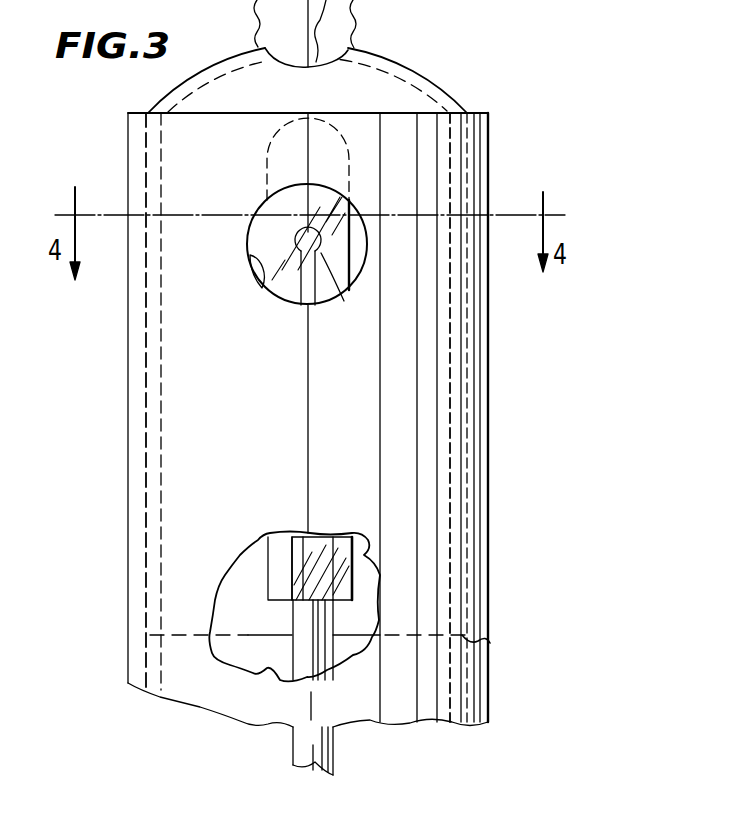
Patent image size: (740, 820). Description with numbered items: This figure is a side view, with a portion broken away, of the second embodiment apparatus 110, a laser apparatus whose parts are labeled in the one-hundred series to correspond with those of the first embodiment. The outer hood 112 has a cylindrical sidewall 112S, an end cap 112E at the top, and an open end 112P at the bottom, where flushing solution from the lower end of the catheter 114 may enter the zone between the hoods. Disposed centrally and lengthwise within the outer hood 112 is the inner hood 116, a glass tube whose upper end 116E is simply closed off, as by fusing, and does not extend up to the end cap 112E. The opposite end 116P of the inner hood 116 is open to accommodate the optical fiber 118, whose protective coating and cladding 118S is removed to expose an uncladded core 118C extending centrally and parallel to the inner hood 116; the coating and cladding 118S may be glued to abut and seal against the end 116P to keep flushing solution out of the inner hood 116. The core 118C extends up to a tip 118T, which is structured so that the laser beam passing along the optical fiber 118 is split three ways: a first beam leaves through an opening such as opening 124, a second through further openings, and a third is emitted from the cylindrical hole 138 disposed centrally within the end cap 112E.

The apparatus 110 is at (610, 371).
The outer hood 112 is at (437, 96).
The end cap 112E is at (400, 63).
The sidewall 112S is at (470, 362).
The open end 112P is at (490, 640).
The catheter 114 is at (490, 607).
The inner hood 116 is at (355, 533).
The upper end 116E is at (323, 84).
The end 116P is at (288, 601).
The optical fiber 118 is at (335, 753).
The tip 118T is at (321, 267).
The uncladded core 118C is at (268, 535).
The protective coating and cladding 118S is at (295, 652).
The opening 124 is at (265, 282).
The cylindrical hole 138 is at (332, 60).